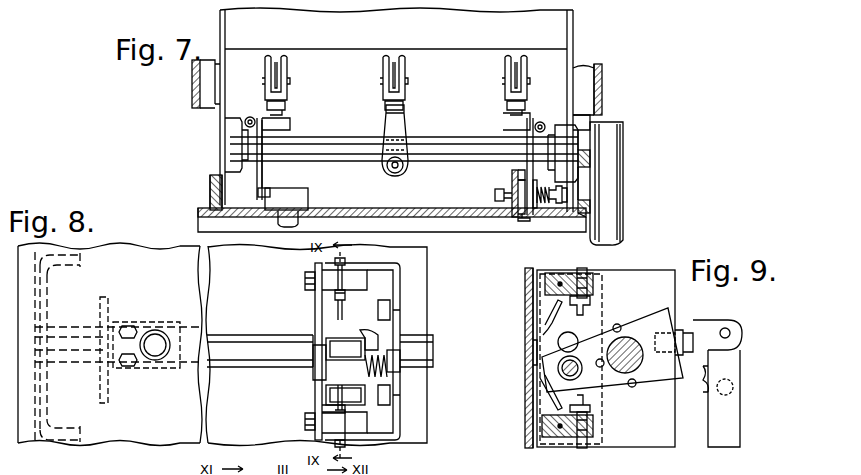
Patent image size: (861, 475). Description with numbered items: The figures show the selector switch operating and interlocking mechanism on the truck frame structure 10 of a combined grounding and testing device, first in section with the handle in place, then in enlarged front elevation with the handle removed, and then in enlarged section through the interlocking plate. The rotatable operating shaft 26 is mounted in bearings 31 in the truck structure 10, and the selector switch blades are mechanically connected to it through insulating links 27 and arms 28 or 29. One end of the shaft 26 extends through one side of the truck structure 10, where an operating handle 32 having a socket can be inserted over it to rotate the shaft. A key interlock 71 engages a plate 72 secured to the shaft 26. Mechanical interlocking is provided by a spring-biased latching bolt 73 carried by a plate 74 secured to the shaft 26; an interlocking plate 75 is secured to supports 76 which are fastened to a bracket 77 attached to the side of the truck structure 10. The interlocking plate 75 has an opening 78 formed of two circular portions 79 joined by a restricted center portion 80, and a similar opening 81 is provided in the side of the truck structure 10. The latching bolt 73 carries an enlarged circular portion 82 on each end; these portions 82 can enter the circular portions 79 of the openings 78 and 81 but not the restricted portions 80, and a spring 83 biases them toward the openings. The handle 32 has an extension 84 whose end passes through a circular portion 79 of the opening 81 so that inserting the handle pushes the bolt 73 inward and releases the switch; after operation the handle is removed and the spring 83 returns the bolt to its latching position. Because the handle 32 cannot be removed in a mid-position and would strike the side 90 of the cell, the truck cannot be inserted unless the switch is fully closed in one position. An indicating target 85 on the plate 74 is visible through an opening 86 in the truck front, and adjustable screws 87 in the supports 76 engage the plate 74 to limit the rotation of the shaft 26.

In FIG. 7, the truck frame structure 10 is at (600, 48).
In FIG. 7, the rotatable operating shaft 26 is at (478, 148).
In FIG. 8, the rotatable operating shaft 26 is at (262, 340).
In FIG. 9, the rotatable operating shaft 26 is at (638, 366).
In FIG. 7, the insulating links 27 is at (284, 66).
In FIG. 9, the insulating links 27 is at (740, 413).
In FIG. 7, the arm 28 is at (287, 97).
In FIG. 9, the arm 28 is at (706, 320).
In FIG. 7, the arm 29 is at (405, 124).
In FIG. 7, the bearings 31 is at (230, 118).
In FIG. 7, the operating handle 32 is at (657, 150).
In FIG. 7, the key interlock 71 is at (308, 196).
In FIG. 8, the key interlock 71 is at (160, 330).
In FIG. 7, the plate 72 is at (266, 182).
In FIG. 8, the plate 72 is at (110, 312).
In FIG. 7, the spring-biased latching bolt 73 is at (508, 200).
In FIG. 9, the spring-biased latching bolt 73 is at (558, 370).
In FIG. 7, the plate 74 is at (531, 122).
In FIG. 8, the plate 74 is at (333, 322).
In FIG. 9, the plate 74 is at (622, 392).
In FIG. 7, the interlocking plate 75 is at (512, 212).
In FIG. 8, the interlocking plate 75 is at (326, 395).
In FIG. 9, the interlocking plate 75 is at (598, 289).
In FIG. 8, the supports 76 is at (367, 298).
In FIG. 9, the supports 76 is at (545, 284).
In FIG. 8, the bracket 77 is at (396, 276).
In FIG. 7, the opening 78 is at (511, 190).
In FIG. 9, the opening 78 is at (545, 333).
In FIG. 9, the circular portions 79 is at (576, 338).
In FIG. 9, the restricted center portion 80 is at (600, 367).
In FIG. 7, the opening 81 is at (580, 182).
In FIG. 7, the enlarged circular portion 82 is at (494, 194).
In FIG. 8, the enlarged circular portion 82 is at (313, 372).
In FIG. 7, the spring 83 is at (545, 205).
In FIG. 8, the spring 83 is at (380, 350).
In FIG. 7, the extension 84 is at (568, 194).
In FIG. 8, the indicating target 85 is at (322, 408).
In FIG. 9, the indicating target 85 is at (545, 398).
In FIG. 9, the opening 86 is at (532, 352).
In FIG. 8, the adjustable screws 87 is at (335, 262).
In FIG. 9, the adjustable screws 87 is at (587, 270).
In FIG. 7, the side 90 is at (602, 97).